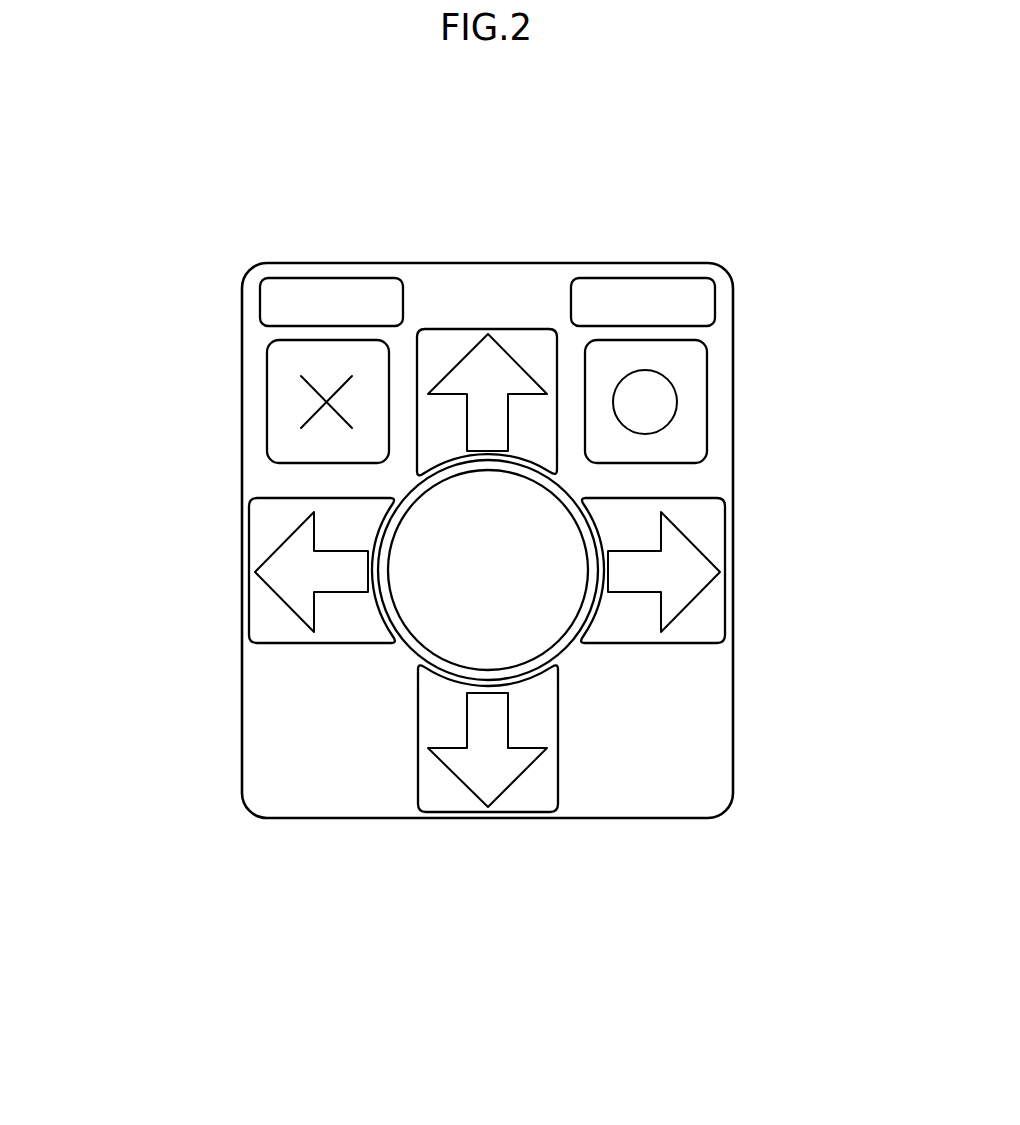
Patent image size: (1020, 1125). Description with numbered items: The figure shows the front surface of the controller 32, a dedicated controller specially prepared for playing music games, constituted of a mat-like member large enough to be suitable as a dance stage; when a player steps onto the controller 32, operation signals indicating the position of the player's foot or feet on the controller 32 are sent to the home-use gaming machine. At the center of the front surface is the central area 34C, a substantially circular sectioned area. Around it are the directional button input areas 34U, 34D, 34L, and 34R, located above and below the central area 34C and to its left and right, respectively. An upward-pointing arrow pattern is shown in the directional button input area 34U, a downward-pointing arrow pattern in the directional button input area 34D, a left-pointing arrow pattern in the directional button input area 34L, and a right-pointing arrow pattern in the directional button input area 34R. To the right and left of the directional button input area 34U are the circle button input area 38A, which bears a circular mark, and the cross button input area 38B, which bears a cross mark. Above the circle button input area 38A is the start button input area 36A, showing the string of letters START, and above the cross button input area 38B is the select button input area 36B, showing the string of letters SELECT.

The controller 32 is at (319, 820).
The directional button input area 34U is at (488, 333).
The directional button input area 34D is at (473, 813).
The directional button input area 34L is at (247, 540).
The directional button input area 34R is at (733, 542).
The central area 34C is at (558, 648).
The start button input area 36A is at (640, 278).
The select button input area 36B is at (333, 278).
The circle button input area 38A is at (707, 418).
The cross button input area 38B is at (267, 405).